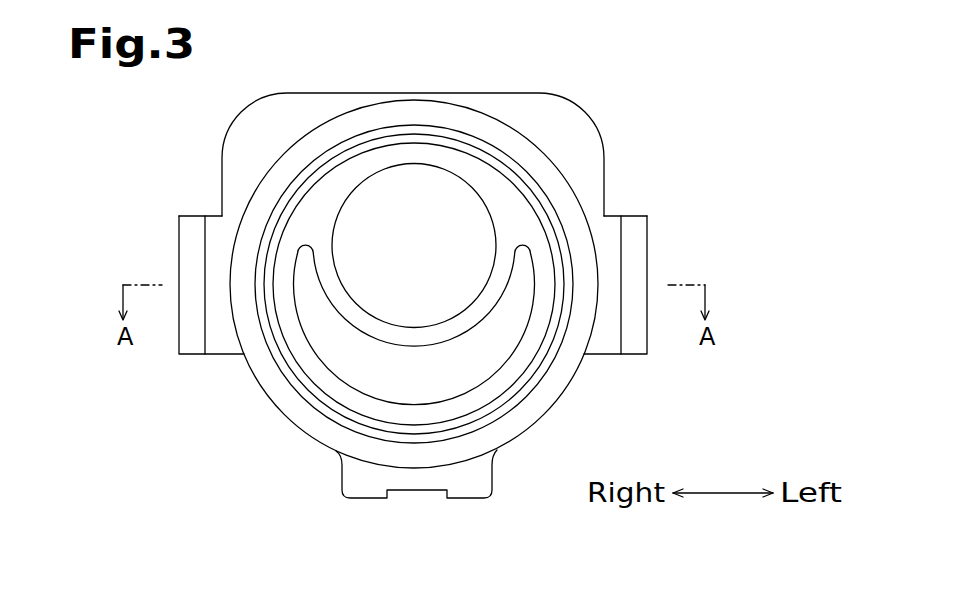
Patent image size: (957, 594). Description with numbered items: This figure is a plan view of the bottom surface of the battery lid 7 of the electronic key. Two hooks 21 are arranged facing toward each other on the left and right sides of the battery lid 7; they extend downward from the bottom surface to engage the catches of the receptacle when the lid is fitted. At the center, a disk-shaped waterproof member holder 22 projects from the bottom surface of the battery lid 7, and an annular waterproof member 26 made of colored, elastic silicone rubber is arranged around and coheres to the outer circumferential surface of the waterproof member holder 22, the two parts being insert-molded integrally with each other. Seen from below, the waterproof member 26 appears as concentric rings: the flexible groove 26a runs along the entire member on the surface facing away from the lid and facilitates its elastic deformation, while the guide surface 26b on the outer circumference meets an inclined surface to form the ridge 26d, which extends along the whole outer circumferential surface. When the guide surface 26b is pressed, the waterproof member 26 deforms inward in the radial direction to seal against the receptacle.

The battery lid 7 is at (616, 95).
The hook 21 is at (180, 345).
The waterproof member holder 22 is at (528, 190).
The waterproof member 26 is at (342, 117).
The flexible groove 26a is at (462, 140).
The guide surface 26b is at (423, 112).
The ridge 26d is at (378, 107).